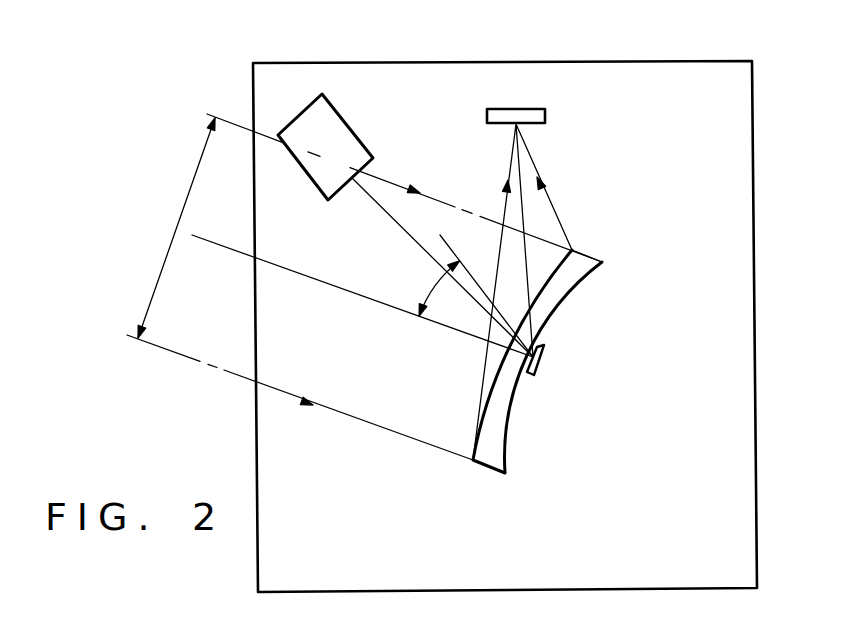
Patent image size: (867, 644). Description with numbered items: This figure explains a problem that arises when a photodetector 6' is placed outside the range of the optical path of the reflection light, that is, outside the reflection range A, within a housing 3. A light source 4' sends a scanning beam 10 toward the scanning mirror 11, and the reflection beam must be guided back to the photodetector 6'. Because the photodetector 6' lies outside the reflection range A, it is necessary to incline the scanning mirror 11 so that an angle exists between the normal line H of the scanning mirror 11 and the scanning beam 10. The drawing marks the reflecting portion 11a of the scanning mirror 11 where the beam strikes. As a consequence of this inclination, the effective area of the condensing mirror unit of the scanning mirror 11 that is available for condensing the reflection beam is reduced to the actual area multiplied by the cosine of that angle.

The housing / casing 3 is at (754, 110).
The light source (laser) 4' is at (340, 147).
The photodetector 6' is at (540, 113).
The scanning beam 10 is at (286, 395).
The scanning mirror 11 is at (598, 317).
The reflecting surface portion of mirror 11a is at (523, 378).
The reflection range A is at (176, 228).
The normal line H is at (445, 240).